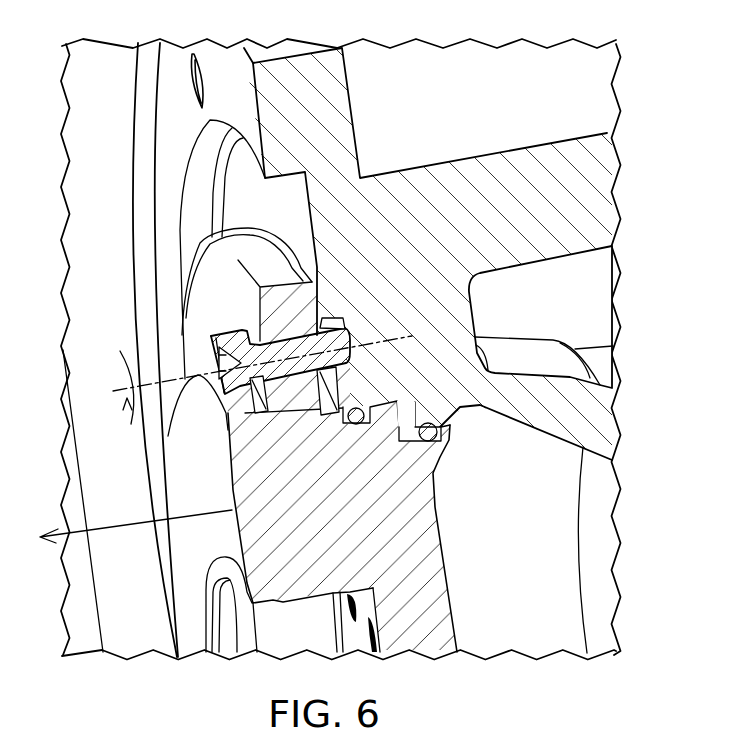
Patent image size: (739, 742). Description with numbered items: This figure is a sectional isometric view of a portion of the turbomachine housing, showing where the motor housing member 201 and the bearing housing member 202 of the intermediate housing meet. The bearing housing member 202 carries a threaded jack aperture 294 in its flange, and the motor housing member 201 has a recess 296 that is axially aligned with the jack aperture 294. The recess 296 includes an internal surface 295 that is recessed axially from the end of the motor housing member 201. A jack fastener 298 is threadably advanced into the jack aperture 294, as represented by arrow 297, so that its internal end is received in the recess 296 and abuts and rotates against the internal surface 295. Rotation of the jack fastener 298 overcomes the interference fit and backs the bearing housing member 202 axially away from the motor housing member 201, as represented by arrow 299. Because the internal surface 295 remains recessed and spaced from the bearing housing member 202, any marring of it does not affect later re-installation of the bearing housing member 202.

The motor housing member 201 is at (485, 174).
The bearing housing member 202 is at (262, 318).
The jack aperture 294 is at (288, 368).
The internal surface 295 is at (343, 360).
The recess 296 is at (338, 318).
The arrow 297 is at (121, 351).
The jack fastener 298 is at (235, 395).
The arrow 299 is at (132, 522).